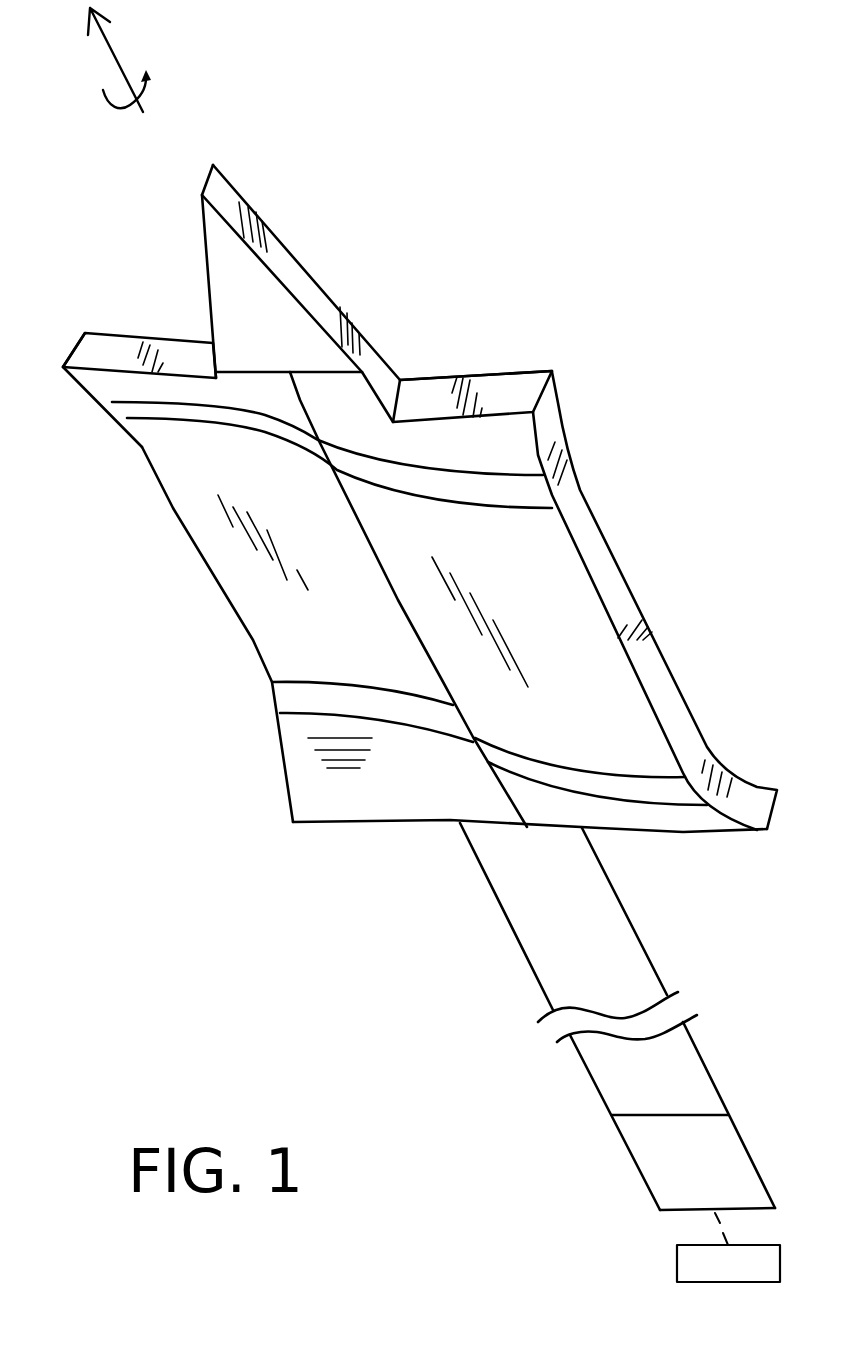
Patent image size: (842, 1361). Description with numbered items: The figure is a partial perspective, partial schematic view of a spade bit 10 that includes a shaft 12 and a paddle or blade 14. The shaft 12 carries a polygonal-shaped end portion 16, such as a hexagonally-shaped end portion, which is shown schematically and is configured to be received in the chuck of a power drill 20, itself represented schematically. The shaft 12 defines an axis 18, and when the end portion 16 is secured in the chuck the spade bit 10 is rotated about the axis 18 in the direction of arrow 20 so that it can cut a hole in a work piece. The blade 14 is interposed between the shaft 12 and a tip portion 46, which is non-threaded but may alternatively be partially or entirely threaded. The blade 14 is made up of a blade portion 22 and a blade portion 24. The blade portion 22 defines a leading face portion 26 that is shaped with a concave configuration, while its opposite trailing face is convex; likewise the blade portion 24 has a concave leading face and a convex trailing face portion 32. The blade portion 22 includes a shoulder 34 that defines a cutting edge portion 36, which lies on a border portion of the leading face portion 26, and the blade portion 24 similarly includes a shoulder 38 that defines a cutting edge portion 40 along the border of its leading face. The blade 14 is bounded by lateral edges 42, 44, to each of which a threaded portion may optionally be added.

The spade bit 10 is at (521, 243).
The shaft 12 is at (485, 938).
The blade 14 is at (178, 564).
The polygonal-shaped end portion 16 is at (713, 1187).
The axis 18 is at (115, 53).
The power drill / arrow 20 is at (120, 103).
The blade portion 22 is at (287, 630).
The blade portion 24 is at (573, 628).
The leading face portion 26 is at (190, 467).
The trailing face portion 32 is at (530, 558).
The shoulder 34 is at (155, 348).
The cutting edge portion 36 is at (113, 368).
The shoulder 38 is at (427, 397).
The cutting edge portion 40 is at (522, 368).
The lateral edge 42 is at (82, 374).
The lateral edge 44 is at (550, 412).
The tip portion 46 is at (265, 222).